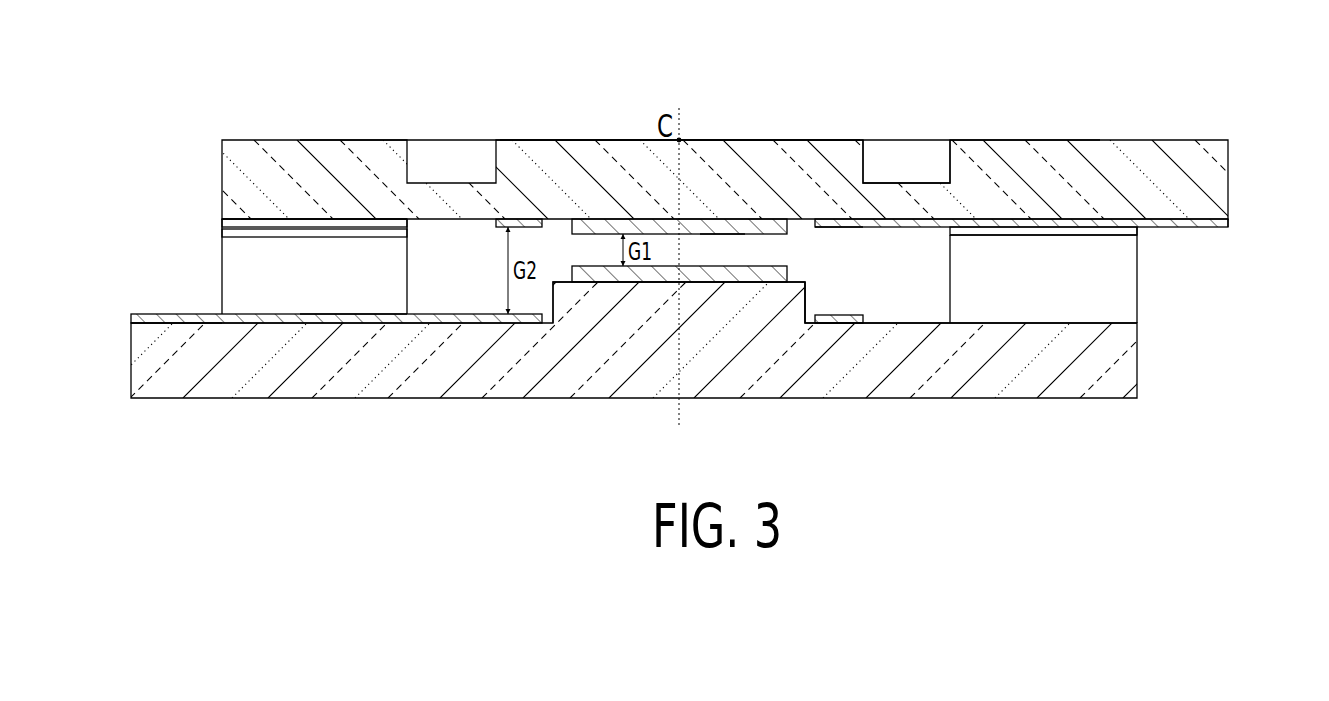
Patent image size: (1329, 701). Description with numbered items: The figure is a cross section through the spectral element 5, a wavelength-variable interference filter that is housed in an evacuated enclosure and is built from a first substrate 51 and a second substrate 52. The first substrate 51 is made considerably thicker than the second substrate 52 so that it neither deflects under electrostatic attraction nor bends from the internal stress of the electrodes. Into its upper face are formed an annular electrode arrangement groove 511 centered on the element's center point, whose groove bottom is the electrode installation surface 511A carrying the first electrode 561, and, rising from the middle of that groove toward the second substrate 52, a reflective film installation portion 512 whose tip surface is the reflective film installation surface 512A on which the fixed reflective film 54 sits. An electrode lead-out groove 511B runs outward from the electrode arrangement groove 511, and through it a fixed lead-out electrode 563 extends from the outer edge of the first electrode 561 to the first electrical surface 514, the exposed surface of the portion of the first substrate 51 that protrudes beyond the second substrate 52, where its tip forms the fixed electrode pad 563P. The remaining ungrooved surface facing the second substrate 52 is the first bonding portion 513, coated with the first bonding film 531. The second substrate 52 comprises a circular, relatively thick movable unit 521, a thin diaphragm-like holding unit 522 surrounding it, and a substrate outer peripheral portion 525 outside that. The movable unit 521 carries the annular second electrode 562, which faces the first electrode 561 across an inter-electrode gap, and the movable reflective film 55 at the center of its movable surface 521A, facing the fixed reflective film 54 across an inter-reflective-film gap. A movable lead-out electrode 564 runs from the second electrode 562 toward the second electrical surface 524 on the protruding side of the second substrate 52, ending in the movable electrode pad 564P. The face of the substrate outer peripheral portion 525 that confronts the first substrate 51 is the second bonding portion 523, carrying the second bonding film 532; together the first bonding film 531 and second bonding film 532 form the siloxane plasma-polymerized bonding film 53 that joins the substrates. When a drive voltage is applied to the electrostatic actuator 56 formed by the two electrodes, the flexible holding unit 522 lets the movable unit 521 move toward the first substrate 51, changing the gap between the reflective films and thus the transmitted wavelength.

The spectral element 5 is at (945, 72).
The first substrate 51 is at (1137, 372).
The electrode arrangement groove 511 is at (950, 297).
The electrode installation surface 511A is at (885, 323).
The electrode lead-out groove 511B is at (370, 322).
The reflective film installation portion 512 is at (805, 302).
The reflective film installation surface 512A is at (805, 265).
The first bonding portion 513 is at (1137, 228).
The first electrical surface 514 is at (162, 314).
The second substrate 52 is at (1228, 198).
The movable unit 521 is at (573, 140).
The movable surface 521A is at (800, 222).
The holding unit 522 is at (921, 183).
The second bonding portion 523 is at (290, 212).
The second electrical surface 524 is at (1192, 224).
The substrate outer peripheral portion 525 is at (342, 157).
The bonding film 53 is at (160, 200).
The first bonding film 531 is at (222, 231).
The second bonding film 532 is at (222, 222).
The fixed reflective film 54 is at (717, 282).
The movable reflective film 55 is at (722, 227).
The electrostatic actuator 56 is at (900, 250).
The first electrode 561 is at (853, 315).
The second electrode 562 is at (851, 227).
The fixed lead-out electrode 563 is at (297, 314).
The fixed electrode pad 563P is at (183, 320).
The movable lead-out electrode 564 is at (1050, 227).
The movable electrode pad 564P is at (1228, 222).